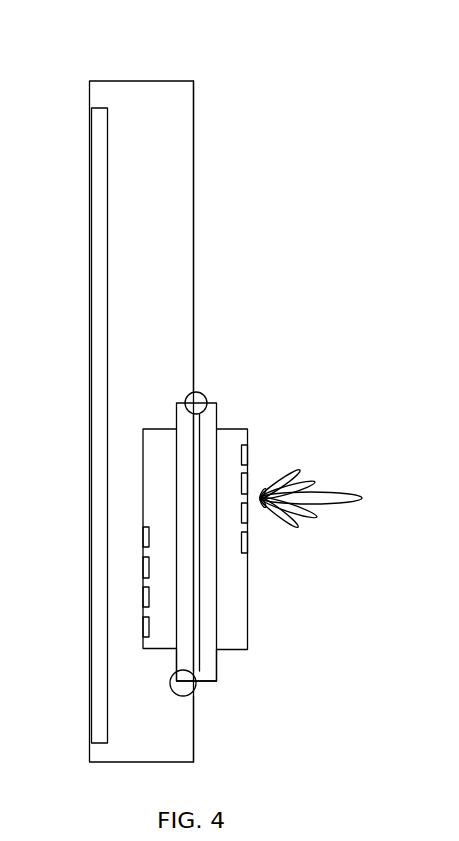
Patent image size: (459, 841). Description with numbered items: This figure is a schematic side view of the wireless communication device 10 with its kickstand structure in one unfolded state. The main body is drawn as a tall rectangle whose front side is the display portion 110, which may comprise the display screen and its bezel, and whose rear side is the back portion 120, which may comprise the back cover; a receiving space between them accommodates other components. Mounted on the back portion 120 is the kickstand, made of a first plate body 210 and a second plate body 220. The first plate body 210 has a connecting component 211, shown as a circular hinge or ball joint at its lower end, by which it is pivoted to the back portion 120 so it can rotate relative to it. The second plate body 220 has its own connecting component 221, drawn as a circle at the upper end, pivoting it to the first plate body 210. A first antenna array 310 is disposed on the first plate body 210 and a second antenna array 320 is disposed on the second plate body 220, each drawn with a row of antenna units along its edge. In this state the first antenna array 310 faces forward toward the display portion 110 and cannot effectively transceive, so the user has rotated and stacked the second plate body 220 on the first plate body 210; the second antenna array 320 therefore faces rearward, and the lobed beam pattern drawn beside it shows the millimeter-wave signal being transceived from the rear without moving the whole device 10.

The wireless communication device 10 is at (112, 63).
The display portion 110 is at (90, 152).
The back portion 120 is at (194, 160).
The first plate body 210 is at (182, 413).
The connecting component 211 is at (193, 692).
The second plate body 220 is at (205, 663).
The connecting component 221 is at (193, 400).
The first antenna array 310 is at (153, 472).
The second antenna array 320 is at (238, 610).